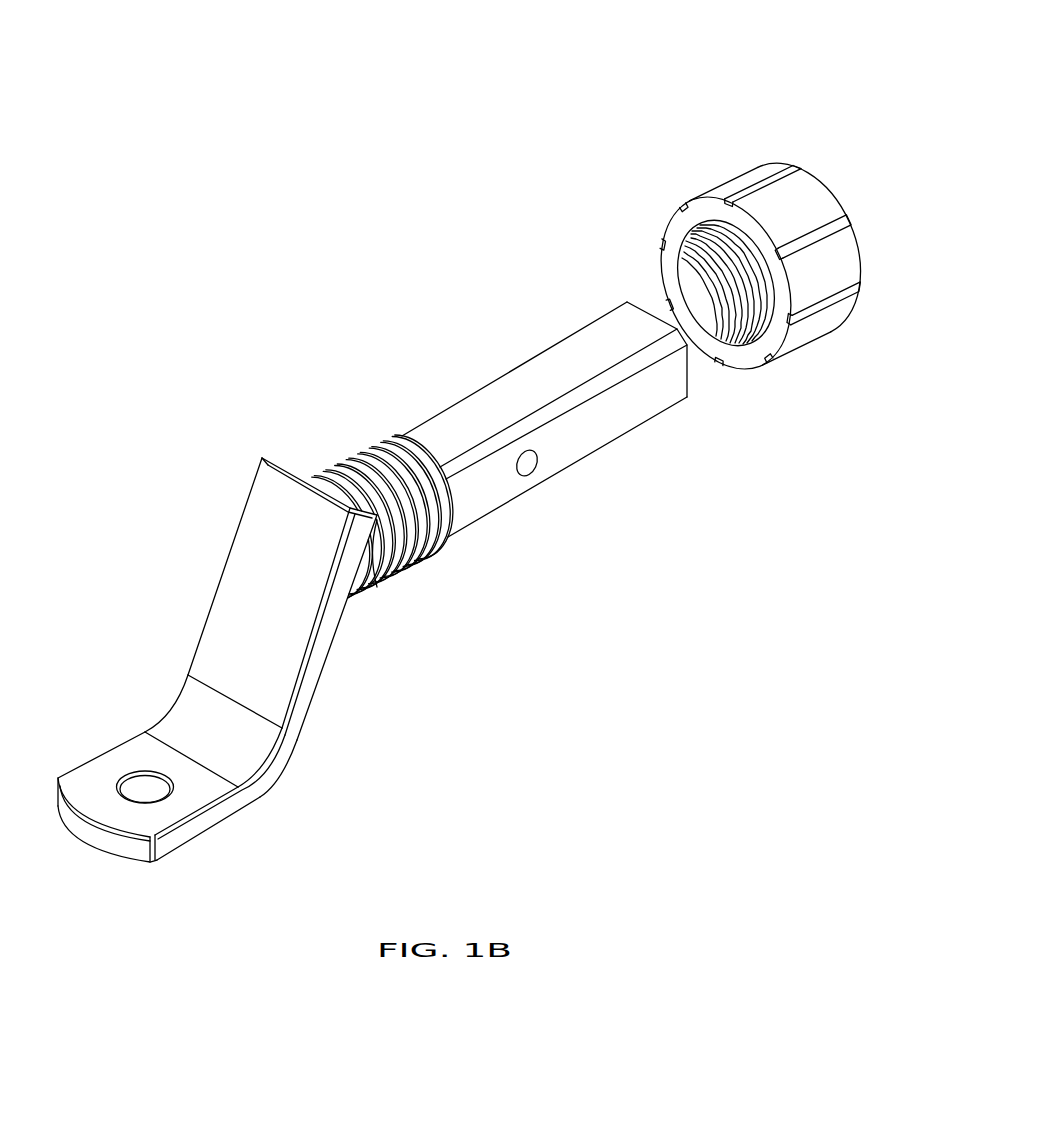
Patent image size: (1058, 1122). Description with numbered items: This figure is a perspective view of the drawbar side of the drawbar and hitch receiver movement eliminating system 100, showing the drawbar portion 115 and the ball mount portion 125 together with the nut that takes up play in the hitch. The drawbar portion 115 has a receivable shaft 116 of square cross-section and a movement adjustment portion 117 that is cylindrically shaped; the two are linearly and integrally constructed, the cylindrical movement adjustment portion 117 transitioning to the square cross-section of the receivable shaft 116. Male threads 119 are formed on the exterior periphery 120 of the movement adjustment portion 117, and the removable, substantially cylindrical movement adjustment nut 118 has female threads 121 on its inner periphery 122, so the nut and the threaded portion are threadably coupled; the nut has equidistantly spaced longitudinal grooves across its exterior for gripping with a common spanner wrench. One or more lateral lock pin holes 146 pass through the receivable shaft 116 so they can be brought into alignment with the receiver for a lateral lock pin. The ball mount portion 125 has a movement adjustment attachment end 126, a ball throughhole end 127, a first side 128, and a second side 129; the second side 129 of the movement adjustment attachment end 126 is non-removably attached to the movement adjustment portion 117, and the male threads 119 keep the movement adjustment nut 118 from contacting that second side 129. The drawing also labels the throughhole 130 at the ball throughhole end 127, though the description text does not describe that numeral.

The drawbar and hitch receiver movement eliminating system 100 is at (658, 52).
The drawbar portion 115 is at (695, 90).
The receivable shaft 116 is at (604, 330).
The movement adjustment portion 117 is at (390, 405).
The movement adjustment nut 118 is at (660, 230).
The male threads 119 is at (417, 567).
The exterior periphery 120 is at (346, 603).
The female threads 121 is at (702, 275).
The inner periphery 122 is at (742, 332).
The ball mount portion 125 is at (215, 618).
The movement adjustment attachment end 126 is at (272, 493).
The ball throughhole end 127 is at (185, 831).
The first side 128 is at (243, 575).
The second side 129 is at (329, 656).
The mounting hole 130 is at (143, 780).
The lateral lock pin holes 146 is at (542, 467).